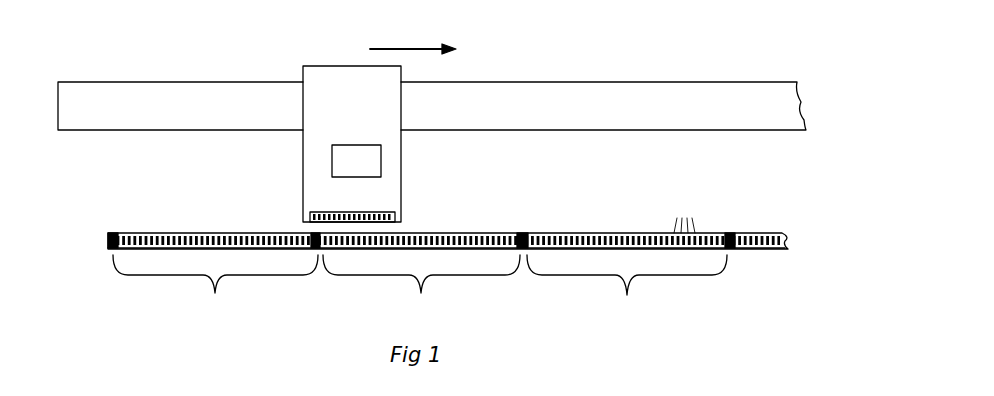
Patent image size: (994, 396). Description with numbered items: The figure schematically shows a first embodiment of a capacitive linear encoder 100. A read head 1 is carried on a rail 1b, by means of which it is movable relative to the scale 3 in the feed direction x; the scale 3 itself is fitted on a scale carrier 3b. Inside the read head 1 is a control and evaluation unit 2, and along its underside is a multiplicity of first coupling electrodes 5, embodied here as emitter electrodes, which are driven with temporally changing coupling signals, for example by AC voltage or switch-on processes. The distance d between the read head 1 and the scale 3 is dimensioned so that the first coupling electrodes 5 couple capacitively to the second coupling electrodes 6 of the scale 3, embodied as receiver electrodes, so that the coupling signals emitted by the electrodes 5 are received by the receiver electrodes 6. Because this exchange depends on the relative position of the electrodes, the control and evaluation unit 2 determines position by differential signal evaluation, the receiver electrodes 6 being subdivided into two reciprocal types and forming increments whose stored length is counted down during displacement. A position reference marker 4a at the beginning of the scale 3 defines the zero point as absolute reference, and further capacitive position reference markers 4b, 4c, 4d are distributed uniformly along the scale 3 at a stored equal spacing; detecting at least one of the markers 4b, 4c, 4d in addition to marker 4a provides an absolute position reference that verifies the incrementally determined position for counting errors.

The capacitive linear encoder 100 is at (540, 45).
The feed direction x is at (408, 45).
The read head 1 is at (312, 85).
The rail 1b is at (252, 124).
The control and evaluation unit 2 is at (367, 160).
The first coupling electrodes 5 is at (378, 203).
The distance d is at (397, 230).
The scale 3 is at (568, 184).
The scale carrier 3b is at (768, 252).
The second coupling electrodes 6 is at (213, 213).
The position reference marker 4a is at (112, 232).
The position reference marker 4b is at (317, 232).
The position reference marker 4c is at (525, 230).
The position reference marker 4d is at (730, 232).